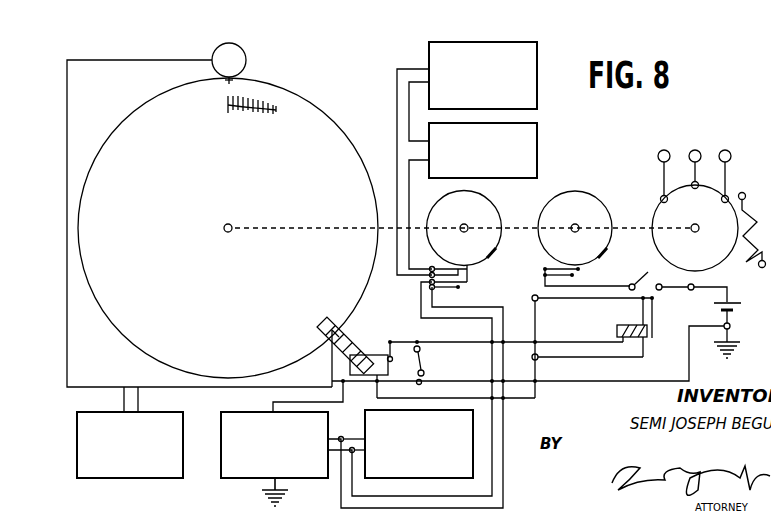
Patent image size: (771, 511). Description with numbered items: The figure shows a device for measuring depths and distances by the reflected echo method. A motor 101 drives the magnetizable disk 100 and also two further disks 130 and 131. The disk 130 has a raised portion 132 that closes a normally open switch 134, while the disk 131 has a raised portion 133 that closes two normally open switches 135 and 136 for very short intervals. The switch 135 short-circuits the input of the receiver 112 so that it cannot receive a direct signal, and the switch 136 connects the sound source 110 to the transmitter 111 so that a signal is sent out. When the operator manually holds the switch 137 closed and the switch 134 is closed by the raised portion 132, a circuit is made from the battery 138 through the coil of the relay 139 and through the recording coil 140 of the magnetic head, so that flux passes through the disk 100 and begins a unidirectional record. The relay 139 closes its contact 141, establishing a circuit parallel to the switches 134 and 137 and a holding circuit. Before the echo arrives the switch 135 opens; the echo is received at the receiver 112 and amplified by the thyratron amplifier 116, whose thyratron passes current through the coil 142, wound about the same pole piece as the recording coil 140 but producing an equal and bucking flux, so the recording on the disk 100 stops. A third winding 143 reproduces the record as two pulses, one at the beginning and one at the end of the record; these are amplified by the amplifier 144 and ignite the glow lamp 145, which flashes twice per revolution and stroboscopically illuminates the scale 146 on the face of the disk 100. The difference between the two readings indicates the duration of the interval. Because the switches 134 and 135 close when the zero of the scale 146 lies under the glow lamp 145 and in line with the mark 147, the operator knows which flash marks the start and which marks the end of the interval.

The magnetizable disk 100 is at (331, 118).
The motor 101 is at (724, 262).
The sound source 110 is at (537, 144).
The transmitter 111 is at (497, 40).
The receiver 112 is at (365, 419).
The thyratron amplifier 116 is at (298, 478).
The disk 130 is at (597, 198).
The disk 131 is at (488, 199).
The raised portion 132 is at (606, 252).
The raised portion 133 is at (494, 252).
The switch 134 is at (579, 272).
The switch 135 is at (459, 289).
The switch 136 is at (468, 278).
The switch 137 is at (649, 277).
The battery 138 is at (732, 312).
The relay 139 is at (617, 333).
The recording coil 140 is at (356, 352).
The contact 141 is at (653, 320).
The coil 142 is at (345, 337).
The third winding 143 is at (340, 330).
The amplifier 144 is at (158, 478).
The glow lamp 145 is at (238, 45).
The scale 146 is at (276, 110).
The mark 147 is at (232, 80).